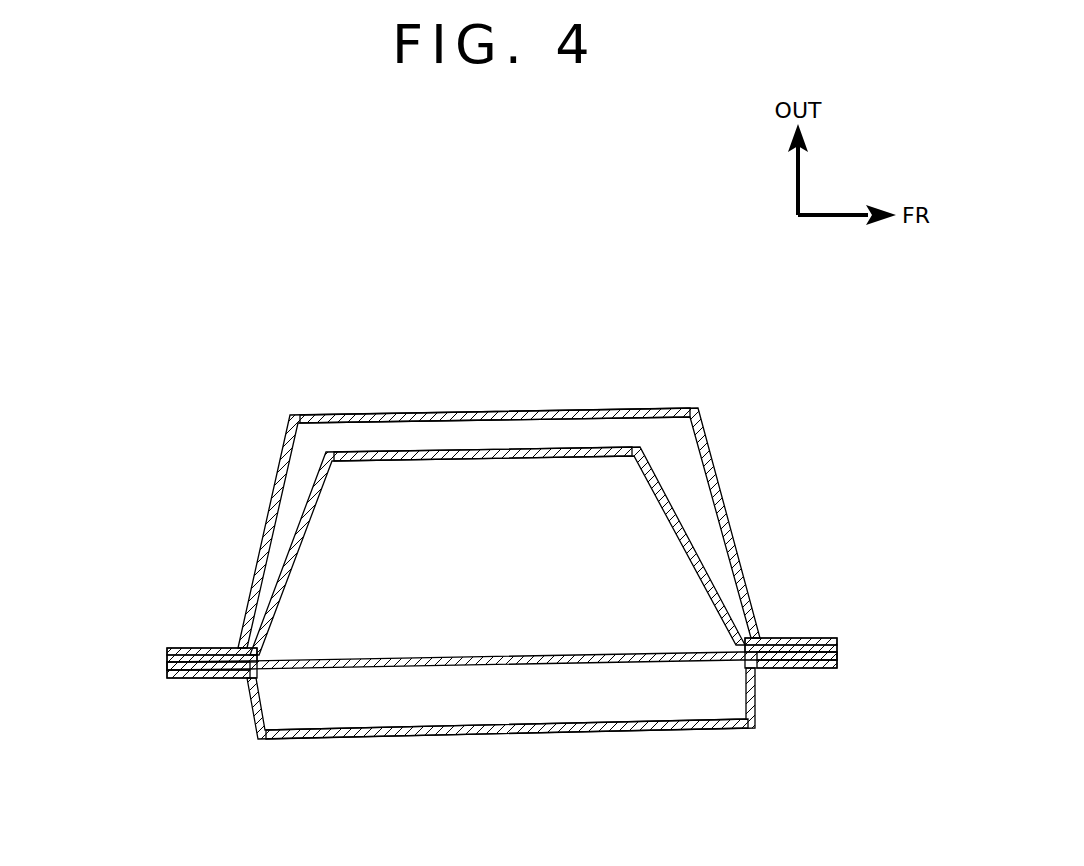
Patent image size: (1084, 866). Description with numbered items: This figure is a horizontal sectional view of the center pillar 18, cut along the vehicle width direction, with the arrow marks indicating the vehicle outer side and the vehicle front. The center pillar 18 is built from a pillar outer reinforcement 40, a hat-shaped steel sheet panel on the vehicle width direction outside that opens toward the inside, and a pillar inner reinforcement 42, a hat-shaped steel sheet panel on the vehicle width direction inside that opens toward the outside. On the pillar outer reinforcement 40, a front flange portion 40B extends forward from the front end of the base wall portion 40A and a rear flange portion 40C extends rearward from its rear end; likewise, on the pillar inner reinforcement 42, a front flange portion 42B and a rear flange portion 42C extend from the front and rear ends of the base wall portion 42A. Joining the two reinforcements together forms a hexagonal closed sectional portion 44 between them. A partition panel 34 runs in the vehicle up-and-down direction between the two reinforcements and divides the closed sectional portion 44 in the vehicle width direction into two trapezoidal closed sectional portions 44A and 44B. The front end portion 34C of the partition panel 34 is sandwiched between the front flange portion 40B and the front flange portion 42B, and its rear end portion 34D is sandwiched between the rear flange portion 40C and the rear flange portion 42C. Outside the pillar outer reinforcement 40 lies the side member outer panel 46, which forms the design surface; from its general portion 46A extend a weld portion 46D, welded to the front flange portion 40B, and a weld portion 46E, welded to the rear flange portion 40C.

The center pillar 18 is at (798, 392).
The partition panel 34 is at (403, 658).
The front end portion 34C is at (838, 660).
The rear end portion 34D is at (167, 668).
The pillar outer reinforcement 40 is at (588, 447).
The base wall portion 40A is at (503, 448).
The front flange portion 40B is at (838, 652).
The rear flange portion 40C is at (167, 660).
The pillar inner reinforcement 42 is at (556, 738).
The base wall portion 42A is at (450, 740).
The front flange portion 42B is at (806, 670).
The rear flange portion 42C is at (184, 680).
The closed sectional portion 44 is at (505, 593).
The closed sectional portion 44A is at (516, 708).
The closed sectional portion 44B is at (486, 566).
The side member outer panel 46 is at (428, 410).
The general portion 46A is at (373, 411).
The weld portion 46D is at (813, 638).
The weld portion 46E is at (193, 646).